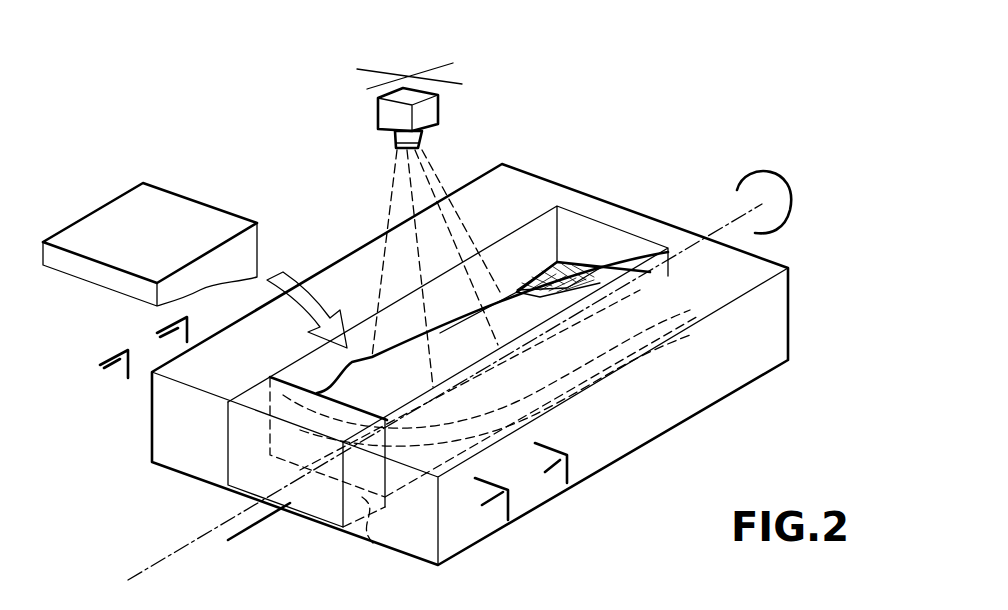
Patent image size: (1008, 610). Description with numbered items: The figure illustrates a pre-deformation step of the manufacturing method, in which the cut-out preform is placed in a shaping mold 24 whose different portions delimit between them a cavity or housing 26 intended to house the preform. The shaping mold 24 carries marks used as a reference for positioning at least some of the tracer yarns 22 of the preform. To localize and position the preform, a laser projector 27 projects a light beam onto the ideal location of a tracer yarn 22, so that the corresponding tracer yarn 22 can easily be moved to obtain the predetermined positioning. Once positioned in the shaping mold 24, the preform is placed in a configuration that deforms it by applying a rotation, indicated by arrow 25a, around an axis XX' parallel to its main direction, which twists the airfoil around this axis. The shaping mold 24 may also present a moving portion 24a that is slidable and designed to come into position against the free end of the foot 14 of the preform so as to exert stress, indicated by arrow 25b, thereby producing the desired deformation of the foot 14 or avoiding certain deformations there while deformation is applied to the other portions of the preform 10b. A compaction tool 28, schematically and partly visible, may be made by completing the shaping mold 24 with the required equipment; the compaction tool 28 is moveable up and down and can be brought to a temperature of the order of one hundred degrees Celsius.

The other portions of the preform 10b is at (515, 270).
The foot of the preform 14 is at (372, 538).
The tracer yarn 22 is at (540, 302).
The shaping mold 24 is at (796, 311).
The moving portion 24a is at (247, 450).
The rotation arrow 25a is at (778, 184).
The stress arrow 25b is at (255, 532).
The cavity or housing 26 is at (537, 238).
The laser projector 27 is at (388, 108).
The compaction tool 28 is at (145, 197).